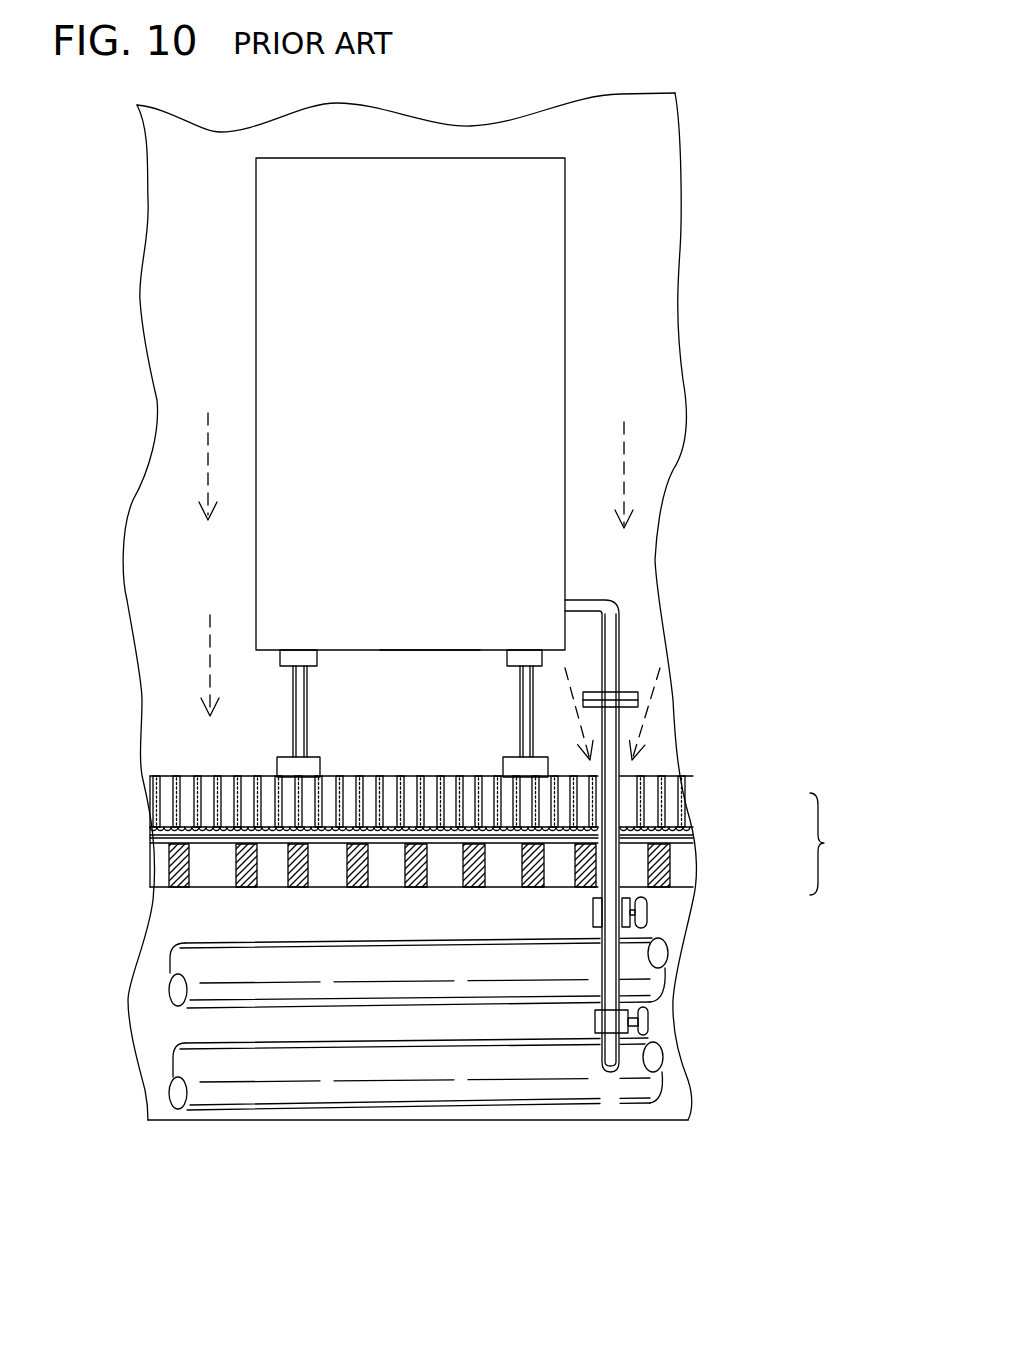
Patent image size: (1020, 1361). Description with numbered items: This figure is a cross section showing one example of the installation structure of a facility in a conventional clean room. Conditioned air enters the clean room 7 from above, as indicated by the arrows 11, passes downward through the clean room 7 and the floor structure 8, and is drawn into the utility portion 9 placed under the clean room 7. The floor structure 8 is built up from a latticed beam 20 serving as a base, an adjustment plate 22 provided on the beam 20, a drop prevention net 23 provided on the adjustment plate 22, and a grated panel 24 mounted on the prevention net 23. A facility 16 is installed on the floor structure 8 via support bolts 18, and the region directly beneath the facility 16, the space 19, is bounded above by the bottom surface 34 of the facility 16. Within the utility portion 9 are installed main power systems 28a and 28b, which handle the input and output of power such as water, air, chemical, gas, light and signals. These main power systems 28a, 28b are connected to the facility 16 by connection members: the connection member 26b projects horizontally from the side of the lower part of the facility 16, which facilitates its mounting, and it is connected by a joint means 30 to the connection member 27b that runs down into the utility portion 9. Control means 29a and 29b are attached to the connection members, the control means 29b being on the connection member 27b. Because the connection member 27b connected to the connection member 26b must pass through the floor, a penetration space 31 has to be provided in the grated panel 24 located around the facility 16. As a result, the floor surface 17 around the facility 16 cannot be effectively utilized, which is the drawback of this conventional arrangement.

The clean room 7 is at (632, 300).
The floor structure 8 is at (499, 835).
The utility portion 9 is at (172, 1032).
The arrow 11 is at (203, 465).
The facility 16 is at (565, 388).
The floor surface 17 is at (530, 725).
The support bolt 18 is at (295, 684).
The space 19 is at (337, 730).
The latticed beam 20 is at (233, 868).
The adjustment plate 22 is at (690, 838).
The drop prevention net 23 is at (690, 826).
The grated panel 24 is at (200, 806).
The connection member 26b is at (617, 623).
The connection member 27b is at (628, 896).
The main power system 28a is at (195, 975).
The main power system 28b is at (248, 1095).
The control means 29a is at (648, 916).
The control means 29b is at (648, 1020).
The joint means 30 is at (667, 657).
The penetration space 31 is at (630, 793).
The bottom surface 34 is at (428, 652).